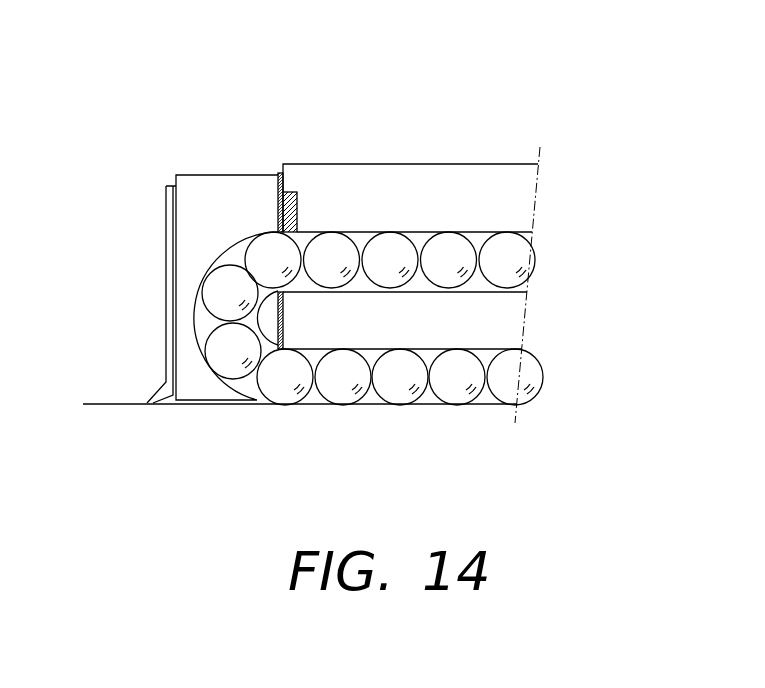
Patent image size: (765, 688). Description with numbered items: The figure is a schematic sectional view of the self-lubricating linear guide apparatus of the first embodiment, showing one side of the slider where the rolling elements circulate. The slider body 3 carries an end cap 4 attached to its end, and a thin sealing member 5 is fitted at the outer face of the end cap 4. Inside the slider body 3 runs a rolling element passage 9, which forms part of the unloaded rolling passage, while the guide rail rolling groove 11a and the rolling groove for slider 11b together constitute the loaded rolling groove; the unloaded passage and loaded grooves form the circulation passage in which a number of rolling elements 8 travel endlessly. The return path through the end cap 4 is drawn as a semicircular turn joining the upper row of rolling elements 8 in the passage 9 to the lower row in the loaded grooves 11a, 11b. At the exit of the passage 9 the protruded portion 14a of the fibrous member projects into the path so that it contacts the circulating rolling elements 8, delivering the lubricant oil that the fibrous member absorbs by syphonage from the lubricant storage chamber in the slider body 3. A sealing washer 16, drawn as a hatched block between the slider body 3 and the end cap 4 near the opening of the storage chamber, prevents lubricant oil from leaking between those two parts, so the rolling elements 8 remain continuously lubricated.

The slider body 3 is at (380, 193).
The end cap 4 is at (242, 198).
The end seal 5 is at (171, 197).
The rolling element 8 is at (455, 248).
The rolling element passage 9 is at (492, 232).
The guide rail rolling groove 11a is at (377, 406).
The rolling groove for slider 11b is at (443, 348).
The protruded portion 14a is at (303, 235).
The sealing washer 16 is at (277, 180).